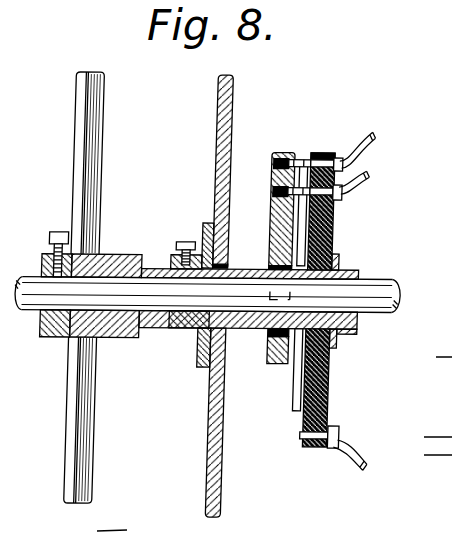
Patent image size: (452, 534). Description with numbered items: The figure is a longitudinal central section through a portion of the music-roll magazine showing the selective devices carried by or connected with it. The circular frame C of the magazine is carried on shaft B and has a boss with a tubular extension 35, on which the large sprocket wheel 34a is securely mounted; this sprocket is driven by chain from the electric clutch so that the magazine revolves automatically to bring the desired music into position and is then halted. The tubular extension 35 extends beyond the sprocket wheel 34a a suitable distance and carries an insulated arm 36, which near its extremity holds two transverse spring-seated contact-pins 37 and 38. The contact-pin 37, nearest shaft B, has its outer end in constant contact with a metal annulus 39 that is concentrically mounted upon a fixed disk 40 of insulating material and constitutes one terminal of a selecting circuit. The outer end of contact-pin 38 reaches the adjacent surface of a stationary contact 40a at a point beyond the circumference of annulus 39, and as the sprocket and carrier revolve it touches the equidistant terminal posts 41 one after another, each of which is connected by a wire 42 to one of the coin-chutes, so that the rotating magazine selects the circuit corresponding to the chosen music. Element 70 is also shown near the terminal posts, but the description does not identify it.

The large sprocket wheel 34a is at (213, 473).
The tubular extension 35 is at (165, 328).
The insulated arm 36 is at (268, 232).
The contact-pin 37 is at (268, 192).
The contact-pin 38 is at (268, 163).
The metal annulus 39 is at (301, 401).
The fixed disk 40 is at (378, 415).
The stationary contact 40a is at (337, 122).
The terminal post 41 is at (338, 163).
The wire 42 is at (411, 121).
The hook 70 is at (353, 169).
The shaft B is at (377, 318).
The circular frame of the magazine C is at (97, 173).